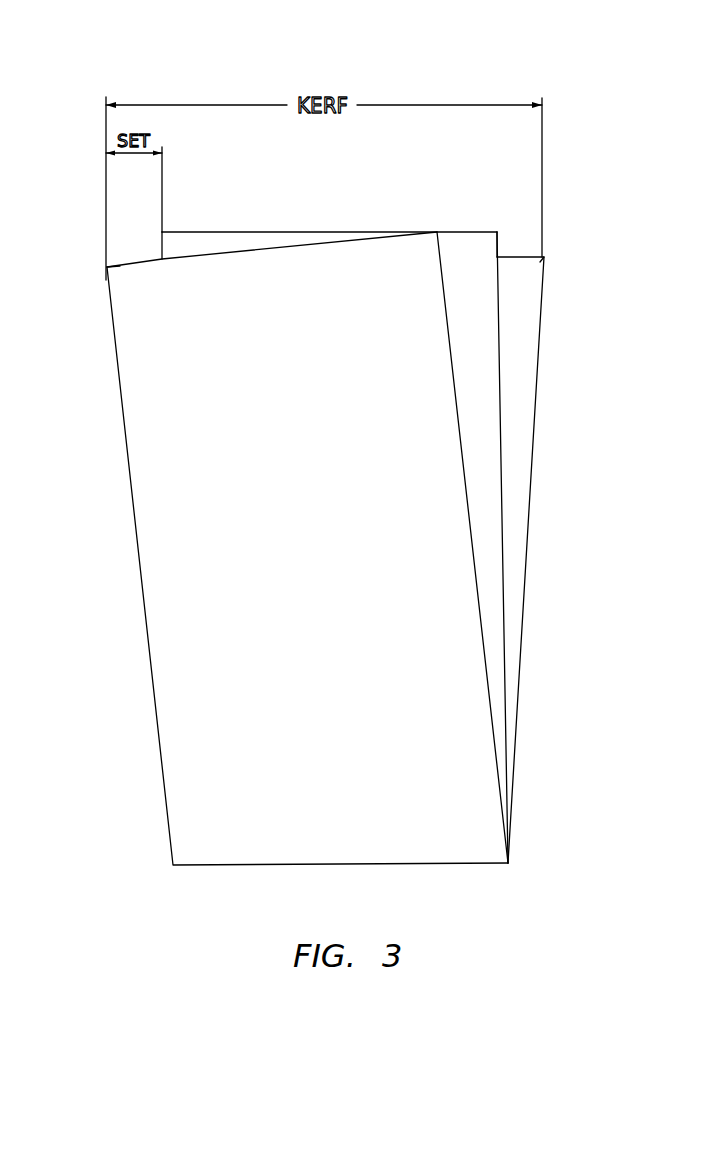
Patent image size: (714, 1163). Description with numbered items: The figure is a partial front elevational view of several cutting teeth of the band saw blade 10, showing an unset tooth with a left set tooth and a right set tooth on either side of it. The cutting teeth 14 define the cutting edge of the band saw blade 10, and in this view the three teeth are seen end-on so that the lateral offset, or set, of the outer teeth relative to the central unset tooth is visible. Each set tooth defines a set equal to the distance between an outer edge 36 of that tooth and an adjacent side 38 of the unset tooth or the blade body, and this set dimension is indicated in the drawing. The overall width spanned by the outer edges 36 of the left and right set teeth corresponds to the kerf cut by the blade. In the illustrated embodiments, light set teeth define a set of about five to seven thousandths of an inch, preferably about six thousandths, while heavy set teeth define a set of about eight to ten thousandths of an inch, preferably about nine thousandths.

The band saw blade 10 is at (334, 444).
The cutting teeth 14 is at (455, 262).
The outer edge 36 is at (106, 266).
The adjacent side 38 is at (160, 248).